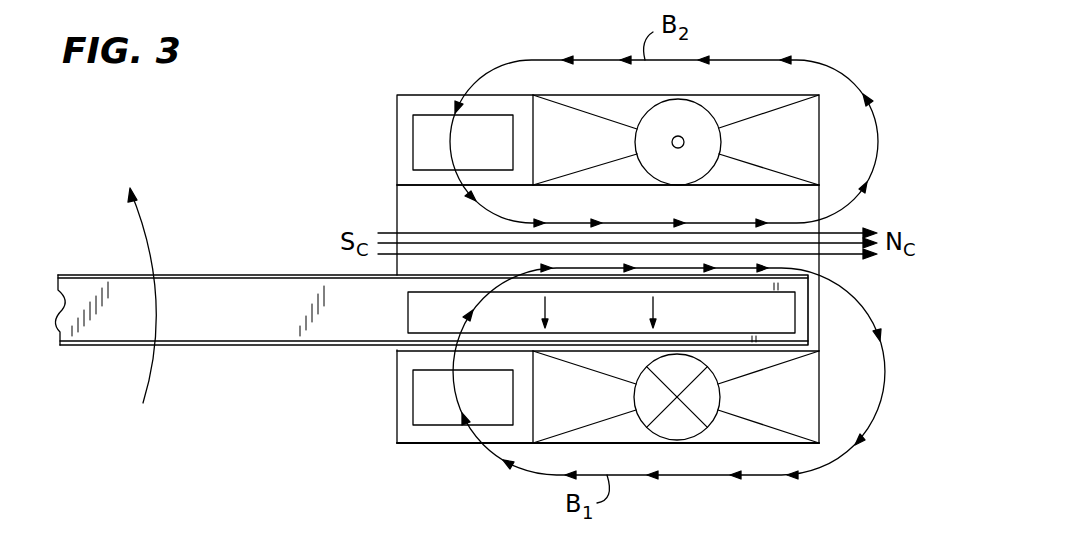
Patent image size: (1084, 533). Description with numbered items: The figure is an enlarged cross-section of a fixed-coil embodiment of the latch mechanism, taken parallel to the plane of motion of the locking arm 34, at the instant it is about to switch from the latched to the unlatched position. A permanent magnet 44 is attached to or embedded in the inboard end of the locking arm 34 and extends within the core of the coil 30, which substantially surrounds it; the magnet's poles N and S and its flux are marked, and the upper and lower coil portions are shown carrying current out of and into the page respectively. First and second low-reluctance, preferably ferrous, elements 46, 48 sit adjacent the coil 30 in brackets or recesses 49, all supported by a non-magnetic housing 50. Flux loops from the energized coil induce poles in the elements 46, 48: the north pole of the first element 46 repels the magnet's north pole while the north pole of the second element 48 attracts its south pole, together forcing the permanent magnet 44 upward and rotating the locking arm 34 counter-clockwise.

The coil 30 is at (782, 148).
The locking arm 34 is at (207, 293).
The permanent magnet 44 is at (795, 313).
The first low-reluctance element 46 is at (413, 397).
The second low-reluctance element 48 is at (413, 155).
The brackets or recesses 49 is at (397, 113).
The housing 50 is at (397, 198).